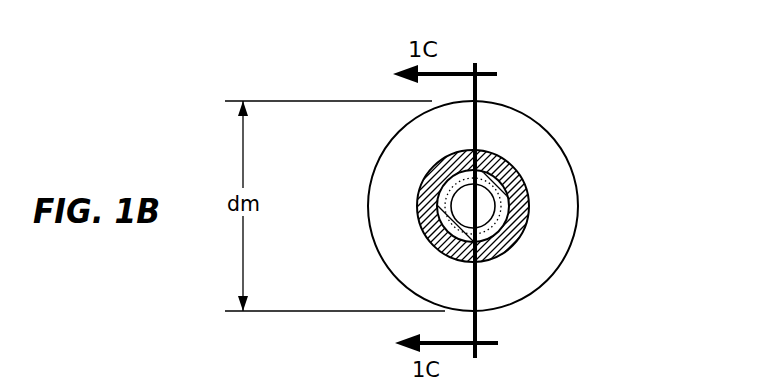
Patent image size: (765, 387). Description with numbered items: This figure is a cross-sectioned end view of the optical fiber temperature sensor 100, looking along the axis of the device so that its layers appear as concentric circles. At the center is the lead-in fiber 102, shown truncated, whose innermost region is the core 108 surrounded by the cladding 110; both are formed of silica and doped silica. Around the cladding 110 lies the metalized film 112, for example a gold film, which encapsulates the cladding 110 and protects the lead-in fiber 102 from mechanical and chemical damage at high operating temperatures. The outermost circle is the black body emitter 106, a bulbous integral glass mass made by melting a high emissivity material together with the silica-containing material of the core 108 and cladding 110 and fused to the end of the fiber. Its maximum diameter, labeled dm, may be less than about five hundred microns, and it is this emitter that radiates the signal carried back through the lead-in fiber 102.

The optical fiber temperature sensor 100 is at (469, 186).
The lead-in fiber 102 is at (494, 220).
The black body emitter 106 is at (371, 165).
The core 108 is at (507, 236).
The cladding 110 is at (505, 190).
The metalized film 112 is at (442, 215).